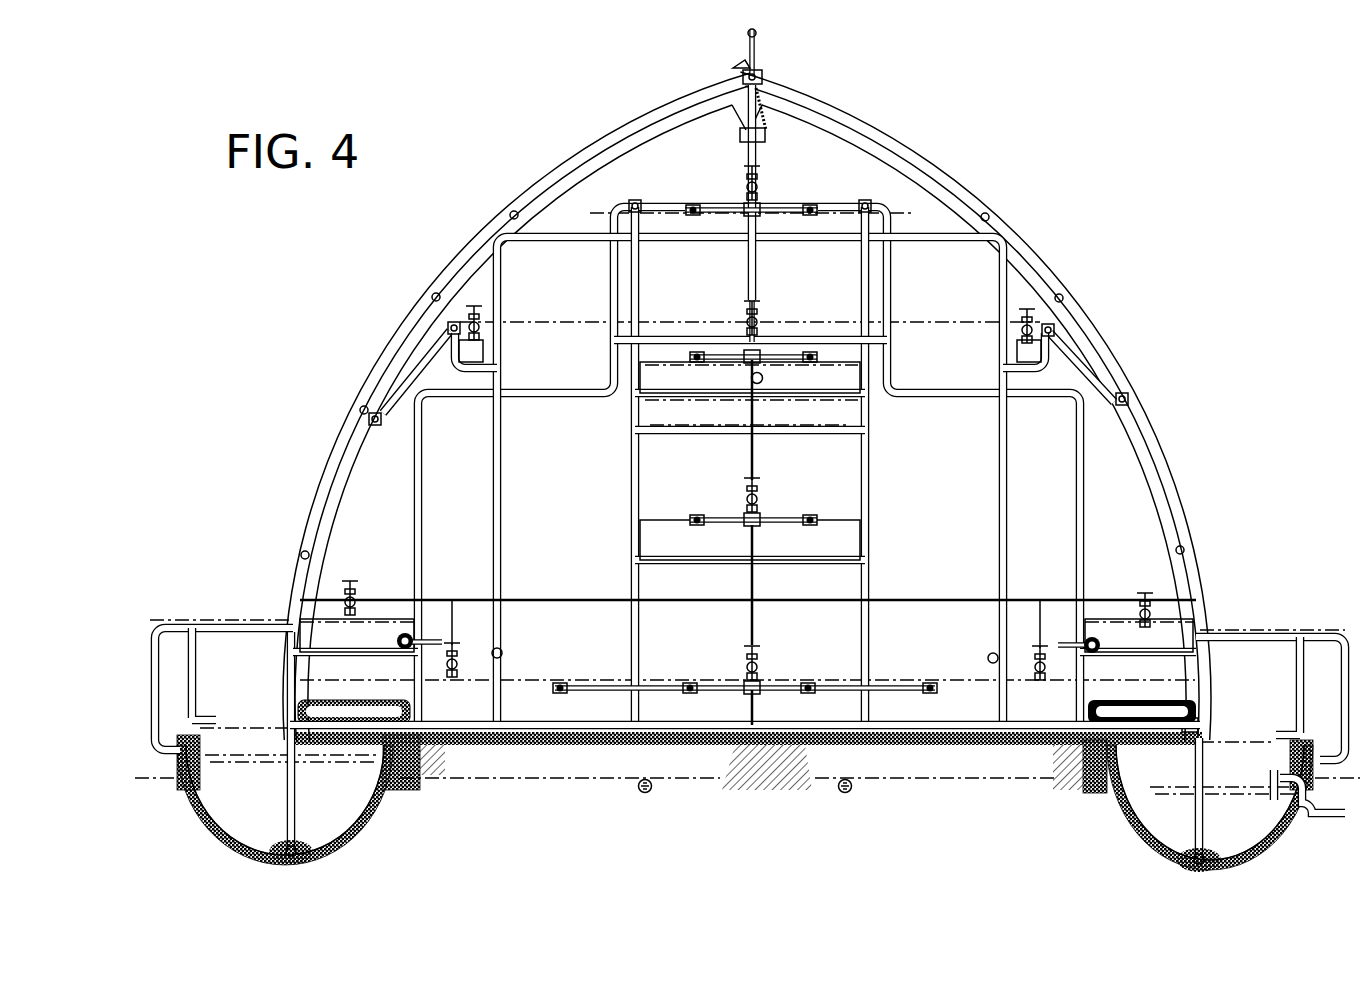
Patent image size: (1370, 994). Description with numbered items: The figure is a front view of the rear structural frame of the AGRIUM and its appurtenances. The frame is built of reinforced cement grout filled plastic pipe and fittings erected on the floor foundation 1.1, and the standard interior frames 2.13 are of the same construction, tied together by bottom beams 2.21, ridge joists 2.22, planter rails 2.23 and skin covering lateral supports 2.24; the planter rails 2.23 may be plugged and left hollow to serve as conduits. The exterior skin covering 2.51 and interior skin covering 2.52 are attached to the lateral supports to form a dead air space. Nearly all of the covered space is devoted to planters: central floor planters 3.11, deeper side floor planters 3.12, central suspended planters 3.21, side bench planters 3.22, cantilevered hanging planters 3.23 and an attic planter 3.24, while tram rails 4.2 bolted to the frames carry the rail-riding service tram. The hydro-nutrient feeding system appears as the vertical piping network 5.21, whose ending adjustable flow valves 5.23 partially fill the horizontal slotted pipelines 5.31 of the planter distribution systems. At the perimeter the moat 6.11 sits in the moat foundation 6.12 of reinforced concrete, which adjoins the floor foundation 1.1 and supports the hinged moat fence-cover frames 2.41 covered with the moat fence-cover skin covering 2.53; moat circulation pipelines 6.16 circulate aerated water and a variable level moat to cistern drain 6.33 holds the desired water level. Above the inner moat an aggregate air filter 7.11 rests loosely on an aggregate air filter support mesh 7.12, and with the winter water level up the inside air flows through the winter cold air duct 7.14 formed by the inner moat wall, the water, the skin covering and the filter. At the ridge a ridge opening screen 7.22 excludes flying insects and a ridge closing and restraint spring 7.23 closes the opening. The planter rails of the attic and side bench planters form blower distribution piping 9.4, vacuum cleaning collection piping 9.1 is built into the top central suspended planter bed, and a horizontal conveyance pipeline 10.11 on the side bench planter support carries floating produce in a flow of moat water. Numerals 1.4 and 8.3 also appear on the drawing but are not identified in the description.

The floor foundation 1.1 is at (558, 742).
The strut 1.4 is at (1110, 406).
The standard interior frames 2.13 is at (1087, 345).
The bottom beams 2.21 is at (287, 845).
The ridge joists 2.22 is at (763, 78).
The planter rails 2.23 is at (1052, 328).
The skin covering lateral supports 2.24 is at (1130, 399).
The hinged moat fence-cover frames 2.41 is at (1300, 665).
The exterior skin covering 2.51 is at (908, 146).
The interior skin covering 2.52 is at (928, 175).
The moat fence-cover skin covering 2.53 is at (1300, 636).
The central floor planters 3.11 is at (800, 710).
The deeper side floor planters 3.12 is at (1085, 712).
The central suspended planters 3.21 is at (722, 560).
The side bench planters 3.22 is at (352, 652).
The cantilevered hanging planters 3.23 is at (1013, 360).
The attic planter 3.24 is at (652, 233).
The tram rails 4.2 is at (988, 658).
The vertical piping network 5.21 is at (755, 620).
The adjustable flow valves 5.23 is at (758, 660).
The horizontal slotted pipelines 5.31 is at (458, 680).
The moat 6.11 is at (1122, 809).
The moat foundation 6.12 is at (366, 841).
The moat circulation pipelines 6.16 is at (852, 789).
The variable level moat to cistern drain 6.33 is at (1278, 800).
The aggregate air filter 7.11 is at (1188, 732).
The aggregate air filter support mesh 7.12 is at (1150, 735).
The winter cold air duct 7.14 is at (358, 745).
The ridge opening screen 7.22 is at (740, 66).
The ridge closing and restraint spring 7.23 is at (748, 133).
The vent pipe 8.3 is at (760, 35).
The vacuum cleaning built-in collection piping 9.1 is at (752, 378).
The blower distribution piping 9.4 is at (606, 344).
The horizontal conveyance pipeline 10.11 is at (398, 640).